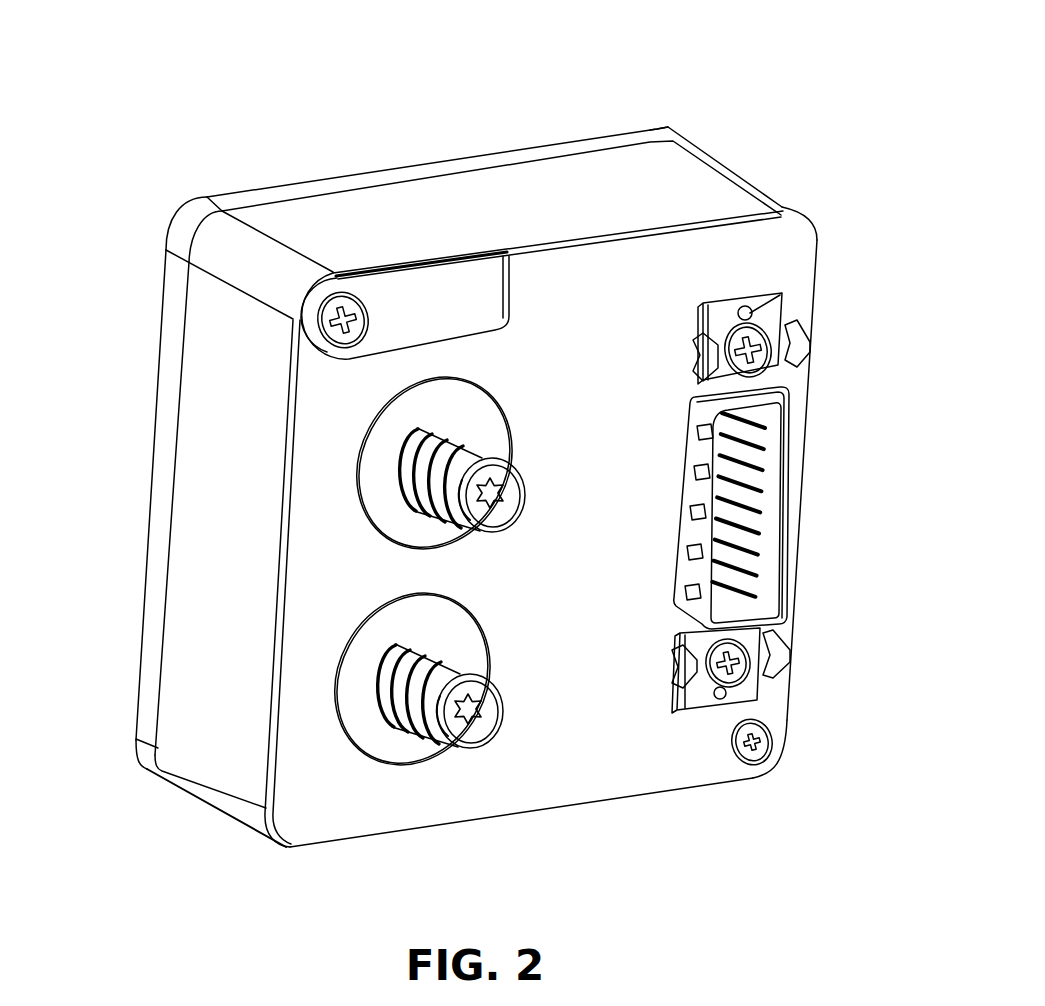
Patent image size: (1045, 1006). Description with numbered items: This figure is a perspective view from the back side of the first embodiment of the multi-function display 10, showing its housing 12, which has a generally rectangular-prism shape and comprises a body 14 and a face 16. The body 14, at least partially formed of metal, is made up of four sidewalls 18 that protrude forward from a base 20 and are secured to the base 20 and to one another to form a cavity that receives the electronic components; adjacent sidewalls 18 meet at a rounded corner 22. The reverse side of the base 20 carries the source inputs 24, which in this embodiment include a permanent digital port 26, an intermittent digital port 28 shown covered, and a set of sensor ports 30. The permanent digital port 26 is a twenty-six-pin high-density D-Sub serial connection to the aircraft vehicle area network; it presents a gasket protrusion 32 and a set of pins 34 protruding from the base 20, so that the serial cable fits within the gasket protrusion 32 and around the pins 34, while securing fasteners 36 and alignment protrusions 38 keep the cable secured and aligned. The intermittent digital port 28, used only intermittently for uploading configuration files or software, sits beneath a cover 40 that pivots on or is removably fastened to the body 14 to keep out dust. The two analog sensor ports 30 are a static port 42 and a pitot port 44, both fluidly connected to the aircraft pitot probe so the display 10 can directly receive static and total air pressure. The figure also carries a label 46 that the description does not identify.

The multi-function display 10 is at (120, 33).
The housing 12 is at (858, 223).
The body 14 is at (693, 147).
The face 16 is at (117, 163).
The sidewalls 18 is at (523, 188).
The base 20 is at (622, 780).
The rounded corner 22 is at (212, 235).
The source inputs 24 is at (777, 498).
The permanent digital port 26 is at (784, 455).
The intermittent digital port 28 is at (390, 290).
The sensor ports 30 is at (492, 515).
The gasket protrusion 32 is at (792, 414).
The set of pins 34 is at (763, 557).
The securing fasteners 36 is at (783, 297).
The alignment protrusions 38 is at (811, 338).
The cover 40 is at (442, 313).
The static port 42 is at (400, 470).
The pitot port 44 is at (382, 683).
The corner edge 46 is at (645, 125).